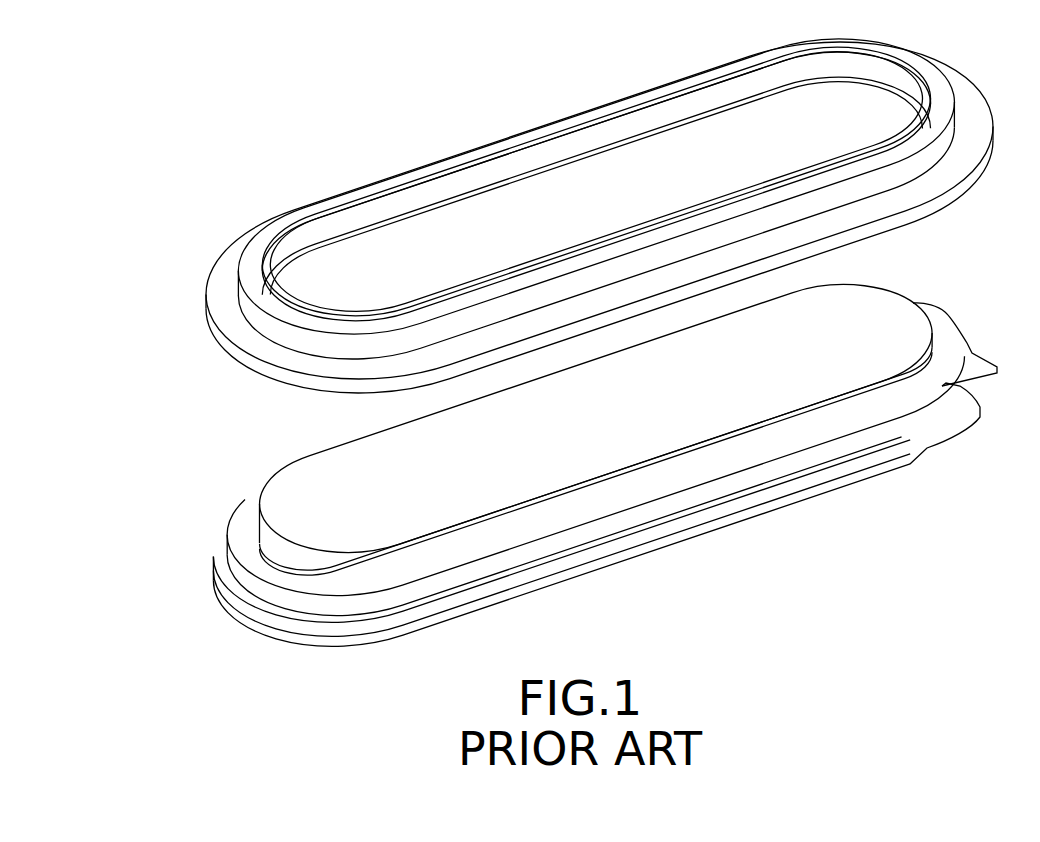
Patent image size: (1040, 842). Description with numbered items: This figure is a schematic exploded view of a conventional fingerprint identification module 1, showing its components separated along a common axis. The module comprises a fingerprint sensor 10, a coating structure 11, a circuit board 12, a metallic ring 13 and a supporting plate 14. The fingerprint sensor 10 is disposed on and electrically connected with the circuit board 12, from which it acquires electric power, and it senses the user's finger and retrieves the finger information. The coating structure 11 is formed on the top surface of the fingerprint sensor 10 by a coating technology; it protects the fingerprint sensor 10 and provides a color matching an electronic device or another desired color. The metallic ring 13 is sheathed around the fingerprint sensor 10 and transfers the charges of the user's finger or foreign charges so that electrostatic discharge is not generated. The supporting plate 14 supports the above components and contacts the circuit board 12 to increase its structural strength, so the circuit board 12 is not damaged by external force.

The fingerprint identification module 1 is at (593, 340).
The fingerprint sensor 10 is at (589, 469).
The coating structure 11 is at (346, 462).
The circuit board 12 is at (247, 537).
The metallic ring 13 is at (222, 296).
The supporting plate 14 is at (793, 500).